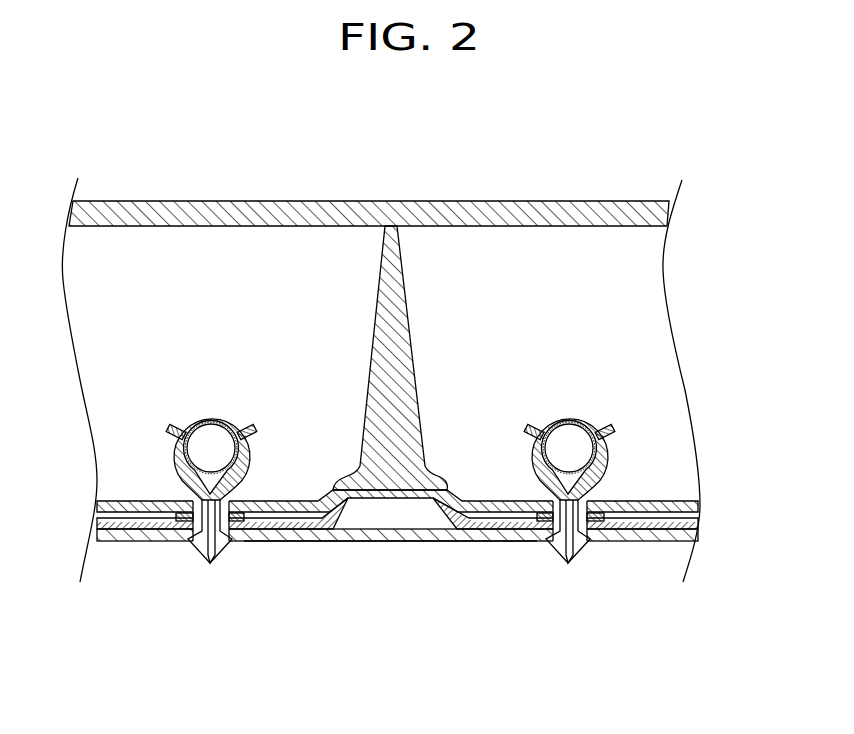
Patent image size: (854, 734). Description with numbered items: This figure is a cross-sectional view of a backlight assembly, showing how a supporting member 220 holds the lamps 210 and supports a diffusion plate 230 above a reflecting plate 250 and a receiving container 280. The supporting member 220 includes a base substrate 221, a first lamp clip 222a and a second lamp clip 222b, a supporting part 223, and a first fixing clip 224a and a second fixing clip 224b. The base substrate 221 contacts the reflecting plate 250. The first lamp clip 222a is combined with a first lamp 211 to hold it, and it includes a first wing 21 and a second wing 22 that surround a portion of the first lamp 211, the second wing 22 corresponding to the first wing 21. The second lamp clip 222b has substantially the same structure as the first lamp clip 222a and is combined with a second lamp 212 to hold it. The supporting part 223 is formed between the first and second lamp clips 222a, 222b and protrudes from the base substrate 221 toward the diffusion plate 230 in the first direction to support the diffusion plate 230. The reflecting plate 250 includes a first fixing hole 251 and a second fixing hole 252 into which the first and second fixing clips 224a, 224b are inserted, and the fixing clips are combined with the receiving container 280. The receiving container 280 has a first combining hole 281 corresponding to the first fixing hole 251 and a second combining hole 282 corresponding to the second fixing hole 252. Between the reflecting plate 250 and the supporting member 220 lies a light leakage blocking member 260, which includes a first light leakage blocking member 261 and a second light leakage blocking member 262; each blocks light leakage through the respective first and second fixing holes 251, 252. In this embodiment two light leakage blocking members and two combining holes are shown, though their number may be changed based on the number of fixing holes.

The first wing 21 is at (170, 430).
The second wing 22 is at (255, 432).
The lamps 210 is at (540, 340).
The first lamp 211 is at (213, 499).
The second lamp 212 is at (572, 502).
The supporting member 220 is at (439, 498).
The base substrate 221 is at (698, 508).
The first lamp clip 222a is at (228, 495).
The second lamp clip 222b is at (556, 496).
The supporting part 223 is at (397, 291).
The first fixing clip 224a is at (208, 562).
The second fixing clip 224b is at (572, 564).
The diffusion plate 230 is at (668, 212).
The reflecting plate 250 is at (698, 525).
The first fixing hole 251 is at (180, 528).
The second fixing hole 252 is at (610, 541).
The light leakage blocking member 260 is at (498, 633).
The first light leakage blocking member 261 is at (268, 541).
The second light leakage blocking member 262 is at (512, 541).
The receiving container 280 is at (698, 538).
The first combining hole 281 is at (243, 528).
The second combining hole 282 is at (537, 528).